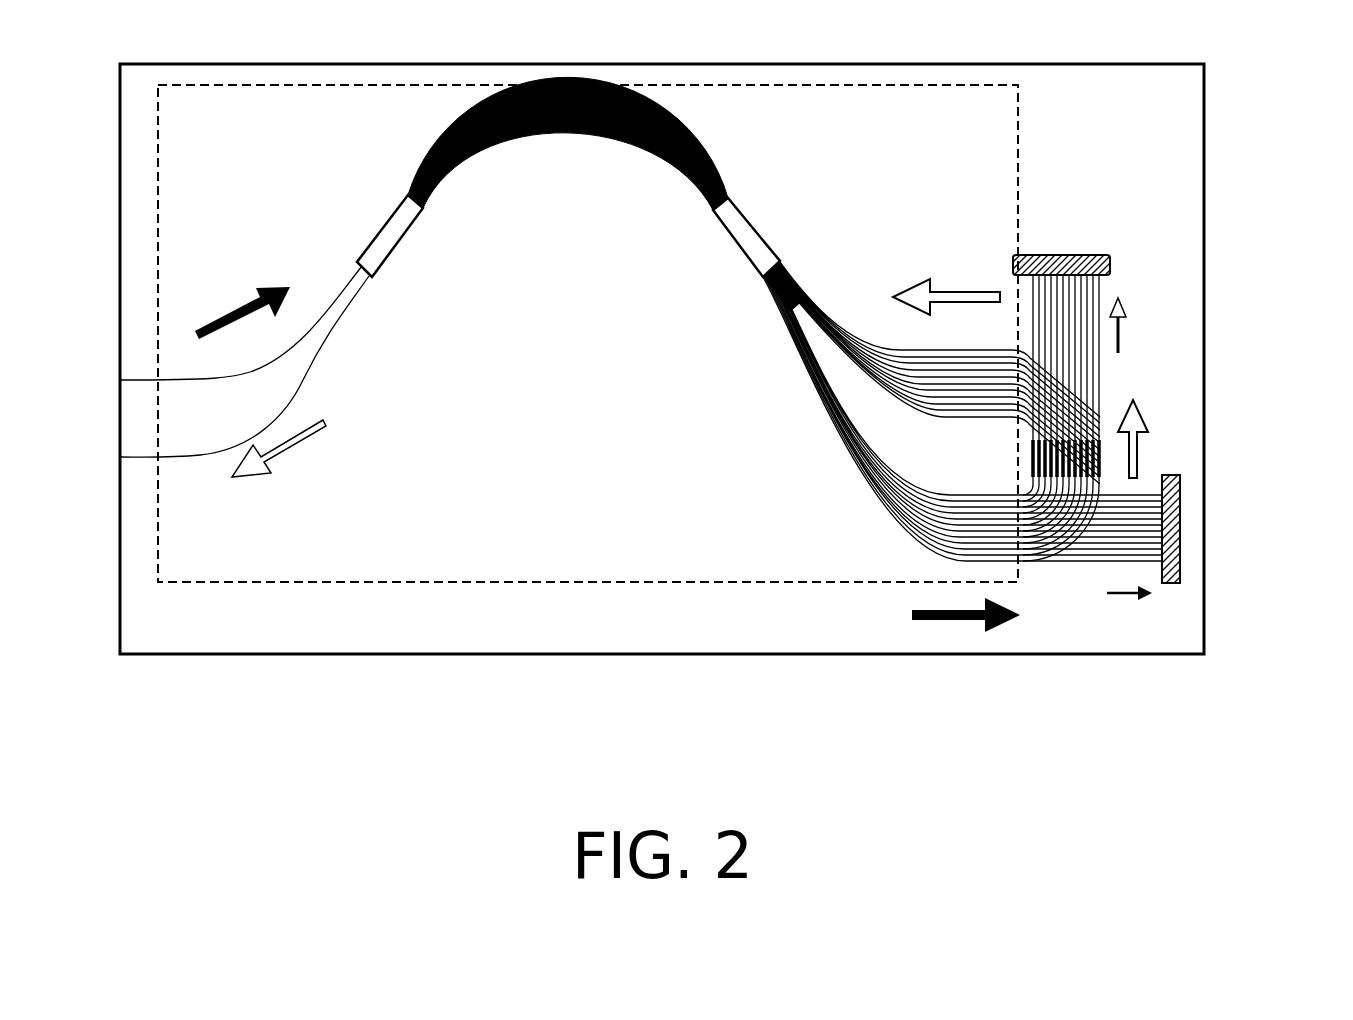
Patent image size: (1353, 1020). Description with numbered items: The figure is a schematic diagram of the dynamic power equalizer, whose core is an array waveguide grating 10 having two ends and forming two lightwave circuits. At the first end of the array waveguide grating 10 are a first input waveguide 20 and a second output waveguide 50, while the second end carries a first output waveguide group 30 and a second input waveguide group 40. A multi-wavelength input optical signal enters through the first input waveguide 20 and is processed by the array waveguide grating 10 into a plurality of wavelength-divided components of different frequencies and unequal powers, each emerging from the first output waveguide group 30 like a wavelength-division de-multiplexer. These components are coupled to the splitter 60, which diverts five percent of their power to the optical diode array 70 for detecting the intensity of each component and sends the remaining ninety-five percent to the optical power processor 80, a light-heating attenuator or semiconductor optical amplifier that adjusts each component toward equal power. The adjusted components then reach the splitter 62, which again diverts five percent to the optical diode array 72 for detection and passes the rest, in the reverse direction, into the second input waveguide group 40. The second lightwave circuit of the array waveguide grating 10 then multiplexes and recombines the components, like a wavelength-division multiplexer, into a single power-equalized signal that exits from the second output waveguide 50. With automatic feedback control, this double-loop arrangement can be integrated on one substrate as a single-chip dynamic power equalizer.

The array waveguide grating 10 is at (566, 164).
The first input waveguide 20 is at (317, 317).
The first output waveguide group 30 is at (830, 433).
The second input waveguide group 40 is at (860, 332).
The second output waveguide 50 is at (303, 378).
The splitter 60 is at (1063, 530).
The splitter 62 is at (1090, 393).
The optical diode array 70 is at (1177, 548).
The optical diode array 72 is at (1103, 268).
The optical power processor 80 is at (1093, 460).